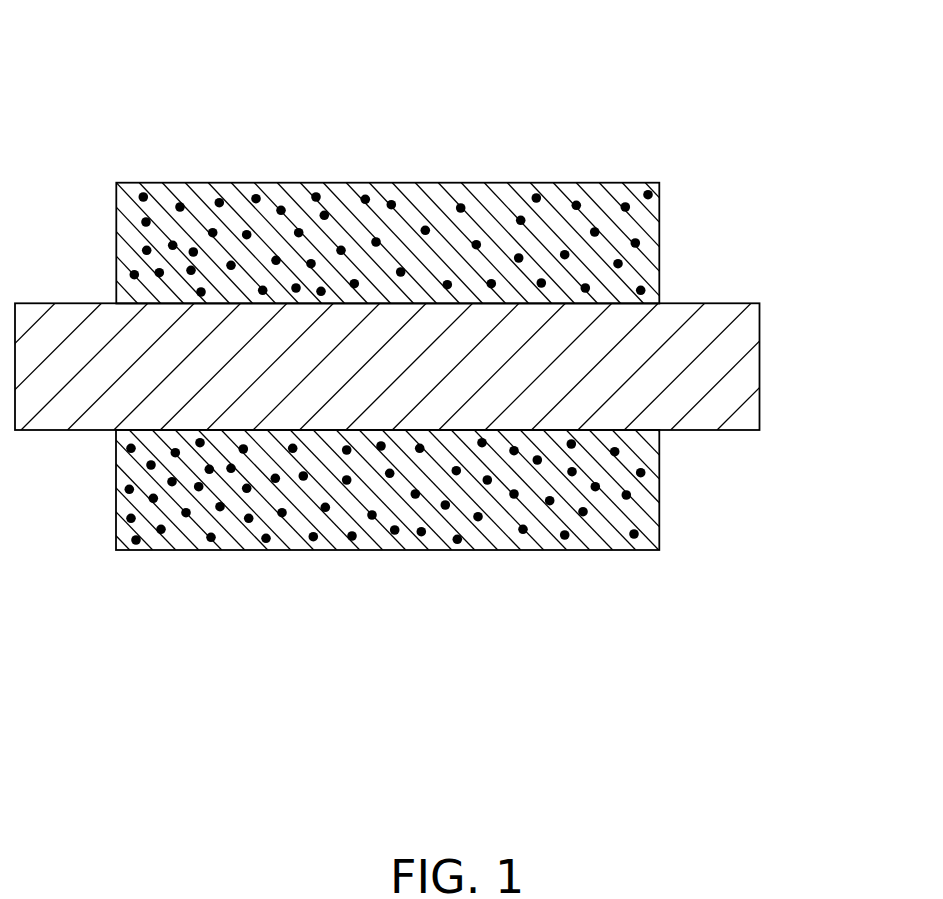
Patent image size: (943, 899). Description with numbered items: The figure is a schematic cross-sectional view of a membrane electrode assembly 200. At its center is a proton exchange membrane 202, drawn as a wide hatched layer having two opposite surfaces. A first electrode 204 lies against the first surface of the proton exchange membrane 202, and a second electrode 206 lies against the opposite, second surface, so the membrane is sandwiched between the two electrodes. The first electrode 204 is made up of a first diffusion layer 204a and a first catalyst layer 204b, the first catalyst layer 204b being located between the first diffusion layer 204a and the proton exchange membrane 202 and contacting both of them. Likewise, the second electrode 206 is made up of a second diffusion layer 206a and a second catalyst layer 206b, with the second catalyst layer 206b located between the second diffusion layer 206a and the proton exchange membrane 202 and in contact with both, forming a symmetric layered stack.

The membrane electrode assembly 200 is at (335, 70).
The proton exchange membrane 202 is at (740, 379).
The first electrode 204 is at (782, 173).
The first diffusion layer 204a is at (645, 224).
The first catalyst layer 204b is at (642, 288).
The second electrode 206 is at (787, 452).
The second diffusion layer 206a is at (643, 520).
The second catalyst layer 206b is at (641, 472).